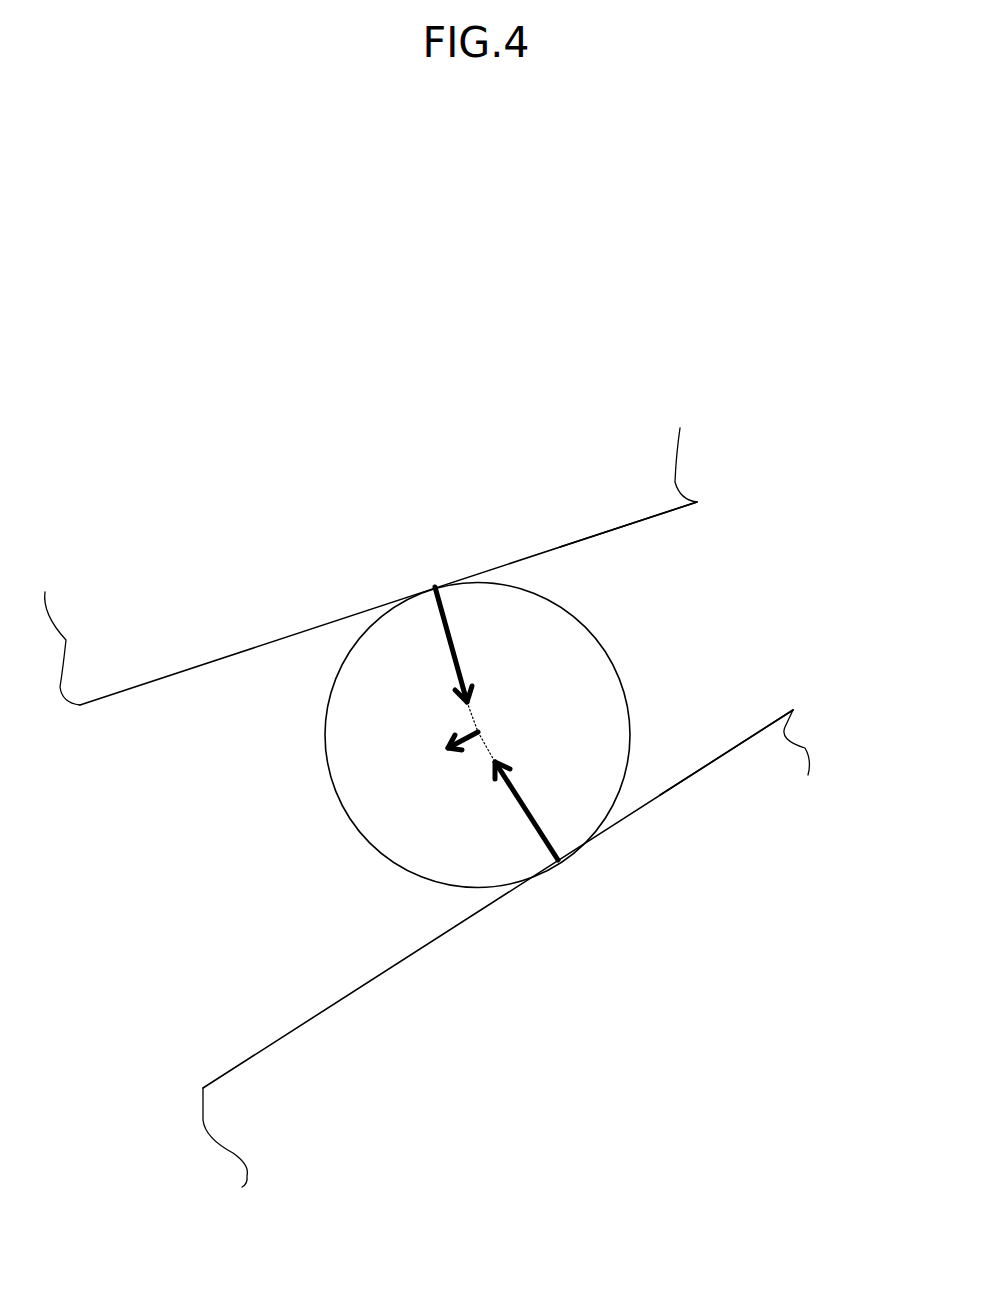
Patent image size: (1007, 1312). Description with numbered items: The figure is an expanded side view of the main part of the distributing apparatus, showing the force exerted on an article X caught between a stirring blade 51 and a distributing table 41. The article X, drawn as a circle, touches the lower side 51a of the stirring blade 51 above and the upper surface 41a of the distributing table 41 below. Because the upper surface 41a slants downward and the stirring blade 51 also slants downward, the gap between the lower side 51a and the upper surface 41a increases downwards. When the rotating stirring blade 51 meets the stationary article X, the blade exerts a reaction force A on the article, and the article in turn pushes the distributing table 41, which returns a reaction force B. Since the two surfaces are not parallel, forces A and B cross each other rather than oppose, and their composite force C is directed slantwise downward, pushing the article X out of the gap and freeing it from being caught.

The stirring blade 51 is at (677, 470).
The lower side of the stirring blade 51a is at (647, 520).
The distributing table 41 is at (783, 730).
The upper surface of the distributing table 41a is at (713, 758).
The article X is at (590, 658).
The reaction force A is at (451, 644).
The reaction force B is at (519, 811).
The composite force C is at (451, 748).